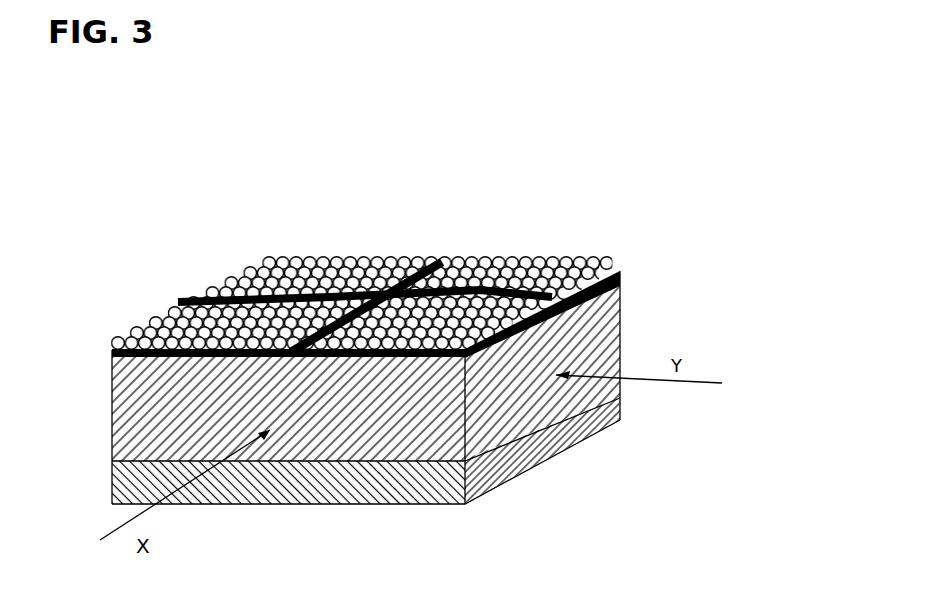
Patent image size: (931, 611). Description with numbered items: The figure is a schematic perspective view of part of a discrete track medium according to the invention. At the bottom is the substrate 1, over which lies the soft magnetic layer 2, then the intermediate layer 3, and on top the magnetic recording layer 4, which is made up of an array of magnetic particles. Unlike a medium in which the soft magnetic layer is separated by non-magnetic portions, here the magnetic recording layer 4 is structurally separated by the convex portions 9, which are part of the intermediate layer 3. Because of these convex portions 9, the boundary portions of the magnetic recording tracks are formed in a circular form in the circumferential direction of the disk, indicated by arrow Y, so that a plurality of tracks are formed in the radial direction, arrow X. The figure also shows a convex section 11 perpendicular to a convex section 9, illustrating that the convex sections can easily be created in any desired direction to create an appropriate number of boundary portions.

The substrate 1 is at (620, 400).
The soft magnetic layer 2 is at (620, 345).
The intermediate layer 3 is at (620, 271).
The magnetic recording layer 4 is at (567, 256).
The convex portion 9 is at (487, 258).
The convex section 11 is at (432, 260).